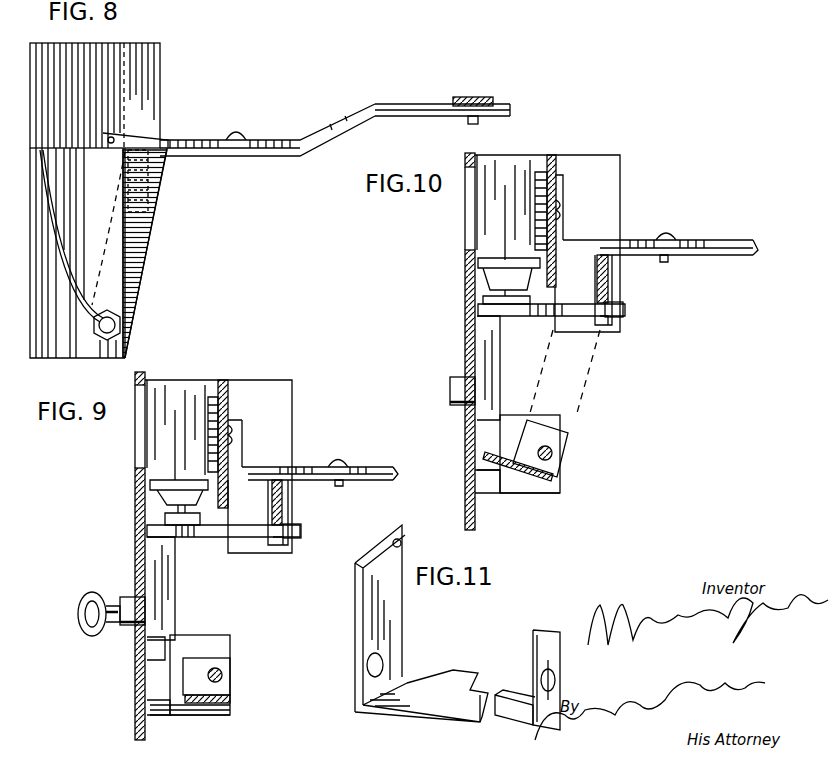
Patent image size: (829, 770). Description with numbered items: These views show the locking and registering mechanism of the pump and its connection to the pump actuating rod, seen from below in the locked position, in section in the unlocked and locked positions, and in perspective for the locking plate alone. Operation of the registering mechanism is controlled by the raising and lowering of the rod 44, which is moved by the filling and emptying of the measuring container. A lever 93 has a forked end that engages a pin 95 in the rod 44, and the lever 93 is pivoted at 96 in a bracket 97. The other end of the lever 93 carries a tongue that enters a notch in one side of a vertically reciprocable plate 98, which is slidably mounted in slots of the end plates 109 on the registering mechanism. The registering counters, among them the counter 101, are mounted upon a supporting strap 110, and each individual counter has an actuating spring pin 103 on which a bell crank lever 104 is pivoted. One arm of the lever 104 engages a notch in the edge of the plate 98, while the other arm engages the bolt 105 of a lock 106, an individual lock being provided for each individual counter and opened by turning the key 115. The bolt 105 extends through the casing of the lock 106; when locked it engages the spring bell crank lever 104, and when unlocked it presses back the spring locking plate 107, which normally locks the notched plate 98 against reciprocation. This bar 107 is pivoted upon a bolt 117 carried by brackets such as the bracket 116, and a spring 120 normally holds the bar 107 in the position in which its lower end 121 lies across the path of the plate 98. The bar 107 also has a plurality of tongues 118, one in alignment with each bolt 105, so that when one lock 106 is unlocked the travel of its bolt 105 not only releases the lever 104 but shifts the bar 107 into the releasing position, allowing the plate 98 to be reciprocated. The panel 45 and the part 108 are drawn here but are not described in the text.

In FIG. 8, the rod 44 is at (490, 99).
In FIG. 10, the door panel 45 is at (465, 258).
In FIG. 9, the door panel 45 is at (135, 478).
In FIG. 8, the lever 93 is at (378, 106).
In FIG. 10, the lever 93 is at (740, 248).
In FIG. 9, the lever 93 is at (386, 472).
In FIG. 8, the pin 95 is at (470, 123).
In FIG. 8, the pivot 96 is at (236, 136).
In FIG. 10, the pivot 96 is at (670, 236).
In FIG. 9, the pivot 96 is at (340, 462).
In FIG. 8, the bracket 97 is at (265, 145).
In FIG. 10, the bracket 97 is at (598, 248).
In FIG. 9, the bracket 97 is at (268, 472).
In FIG. 8, the vertically reciprocable plate 98 is at (148, 183).
In FIG. 10, the vertically reciprocable plate 98 is at (610, 270).
In FIG. 9, the vertically reciprocable plate 98 is at (283, 500).
In FIG. 10, the registering counter 101 is at (505, 200).
In FIG. 10, the actuating spring pin 103 is at (480, 290).
In FIG. 9, the actuating spring pin 103 is at (150, 510).
In FIG. 10, the bell crank lever 104 is at (625, 310).
In FIG. 9, the bell crank lever 104 is at (245, 530).
In FIG. 10, the bolt 105 is at (480, 318).
In FIG. 9, the bolt 105 is at (147, 530).
In FIG. 10, the lock 106 is at (450, 394).
In FIG. 9, the lock 106 is at (128, 596).
In FIG. 8, the spring locking plate 107 is at (130, 250).
In FIG. 10, the spring locking plate 107 is at (558, 472).
In FIG. 9, the spring locking plate 107 is at (230, 692).
In FIG. 11, the spring locking plate 107 is at (358, 635).
In FIG. 10, the sleeve 108 is at (610, 288).
In FIG. 9, the sleeve 108 is at (290, 546).
In FIG. 10, the end plates 109 is at (620, 180).
In FIG. 9, the end plates 109 is at (292, 406).
In FIG. 10, the supporting strap 110 is at (556, 170).
In FIG. 9, the supporting strap 110 is at (220, 444).
In FIG. 9, the key 115 is at (90, 628).
In FIG. 8, the bracket 116 is at (122, 292).
In FIG. 10, the bracket 116 is at (520, 485).
In FIG. 9, the bracket 116 is at (188, 675).
In FIG. 8, the bolt 117 is at (126, 328).
In FIG. 10, the bolt 117 is at (552, 452).
In FIG. 9, the bolt 117 is at (222, 674).
In FIG. 10, the tongues 118 is at (526, 505).
In FIG. 9, the tongues 118 is at (160, 712).
In FIG. 11, the tongues 118 is at (468, 663).
In FIG. 8, the spring 120 is at (118, 252).
In FIG. 10, the lower end 121 is at (583, 392).